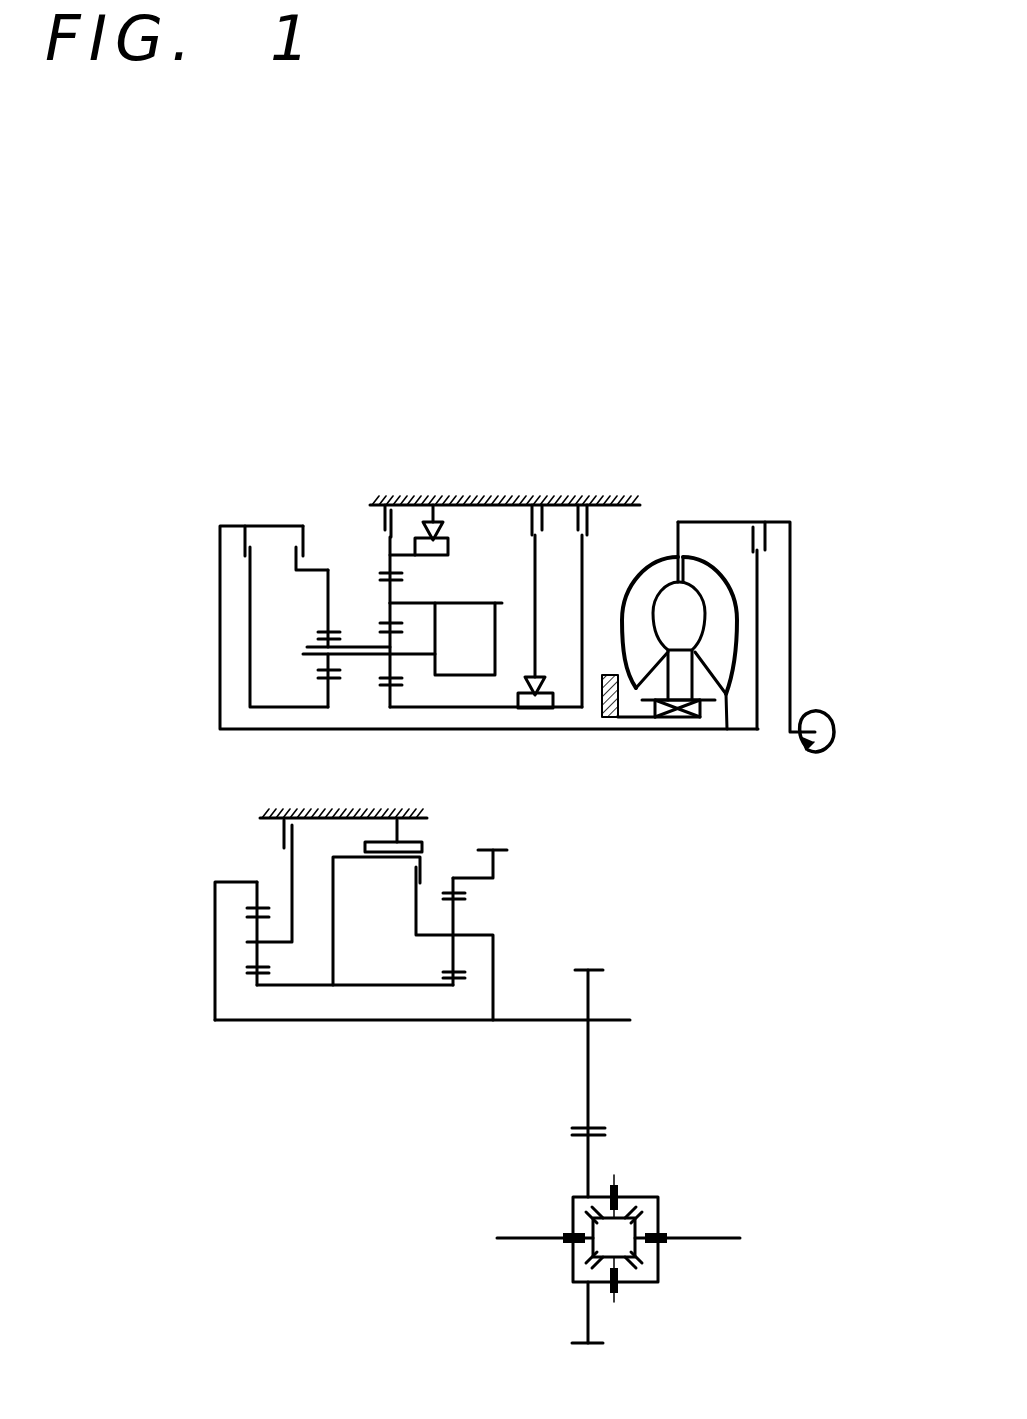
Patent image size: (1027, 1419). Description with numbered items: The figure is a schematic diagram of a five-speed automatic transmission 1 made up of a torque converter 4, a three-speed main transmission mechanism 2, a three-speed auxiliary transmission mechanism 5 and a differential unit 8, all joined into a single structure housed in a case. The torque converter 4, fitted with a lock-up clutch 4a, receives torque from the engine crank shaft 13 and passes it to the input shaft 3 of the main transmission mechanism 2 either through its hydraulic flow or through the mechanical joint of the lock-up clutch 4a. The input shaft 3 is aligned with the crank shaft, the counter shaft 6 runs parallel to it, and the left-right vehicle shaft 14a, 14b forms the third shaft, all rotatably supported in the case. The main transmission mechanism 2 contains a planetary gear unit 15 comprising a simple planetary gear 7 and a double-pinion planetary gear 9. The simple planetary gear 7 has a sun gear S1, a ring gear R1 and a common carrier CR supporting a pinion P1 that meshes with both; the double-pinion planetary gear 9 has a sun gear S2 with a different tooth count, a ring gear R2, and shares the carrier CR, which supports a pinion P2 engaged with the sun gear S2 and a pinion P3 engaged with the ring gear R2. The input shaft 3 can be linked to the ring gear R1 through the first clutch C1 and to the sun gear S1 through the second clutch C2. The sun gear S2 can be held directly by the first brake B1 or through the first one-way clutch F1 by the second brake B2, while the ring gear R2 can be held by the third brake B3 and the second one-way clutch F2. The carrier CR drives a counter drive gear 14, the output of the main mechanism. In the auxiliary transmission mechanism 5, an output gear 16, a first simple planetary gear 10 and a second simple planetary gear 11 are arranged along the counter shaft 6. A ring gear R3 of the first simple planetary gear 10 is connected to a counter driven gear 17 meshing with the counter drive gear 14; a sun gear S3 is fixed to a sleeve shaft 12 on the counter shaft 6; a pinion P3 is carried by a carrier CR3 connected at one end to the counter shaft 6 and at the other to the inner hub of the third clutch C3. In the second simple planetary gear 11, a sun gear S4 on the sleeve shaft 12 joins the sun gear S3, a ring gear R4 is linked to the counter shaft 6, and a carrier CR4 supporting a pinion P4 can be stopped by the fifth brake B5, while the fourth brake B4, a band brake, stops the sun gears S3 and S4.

The automatic transmission 1 is at (454, 347).
The main transmission mechanism 2 is at (560, 432).
The input shaft 3 is at (601, 732).
The torque converter 4 is at (708, 622).
The lock-up clutch 4a is at (762, 542).
The auxiliary transmission mechanism 5 is at (366, 947).
The counter shaft 6 is at (420, 1024).
The simple planetary gear 7 is at (345, 593).
The differential unit 8 is at (632, 1219).
The double-pinion planetary gear 9 is at (456, 591).
The first simple planetary gear 10 is at (467, 923).
The second simple planetary gear 11 is at (211, 898).
The sleeve shaft 12 is at (363, 988).
The crank shaft 13 is at (803, 744).
The counter drive gear 14 is at (498, 625).
The left vehicle shaft 14a is at (519, 1242).
The right vehicle shaft 14b is at (717, 1242).
The planetary gear unit 15 is at (372, 424).
The output gear 16 is at (594, 999).
The counter driven gear 17 is at (496, 849).
The first clutch C1 is at (303, 530).
The second clutch C2 is at (279, 599).
The third clutch C3 is at (413, 938).
The first brake B1 is at (581, 582).
The second brake B2 is at (533, 496).
The third brake B3 is at (386, 497).
The fourth brake B4 is at (393, 814).
The fifth brake B5 is at (291, 812).
The first one-way clutch F1 is at (545, 621).
The second one-way clutch F2 is at (424, 506).
The ring gear R1 is at (326, 601).
The ring gear R2 is at (400, 573).
The ring gear R3 is at (453, 876).
The ring gear R4 is at (222, 880).
The pinion P1 is at (322, 643).
The pinion P2 is at (390, 667).
The pinion P3 is at (387, 613).
The pinion P4 is at (270, 942).
The sun gear S1 is at (323, 681).
The sun gear S2 is at (396, 680).
The sun gear S3 is at (470, 980).
The sun gear S4 is at (253, 984).
The carrier CR is at (438, 639).
The carrier CR3 is at (496, 962).
The carrier CR4 is at (290, 876).